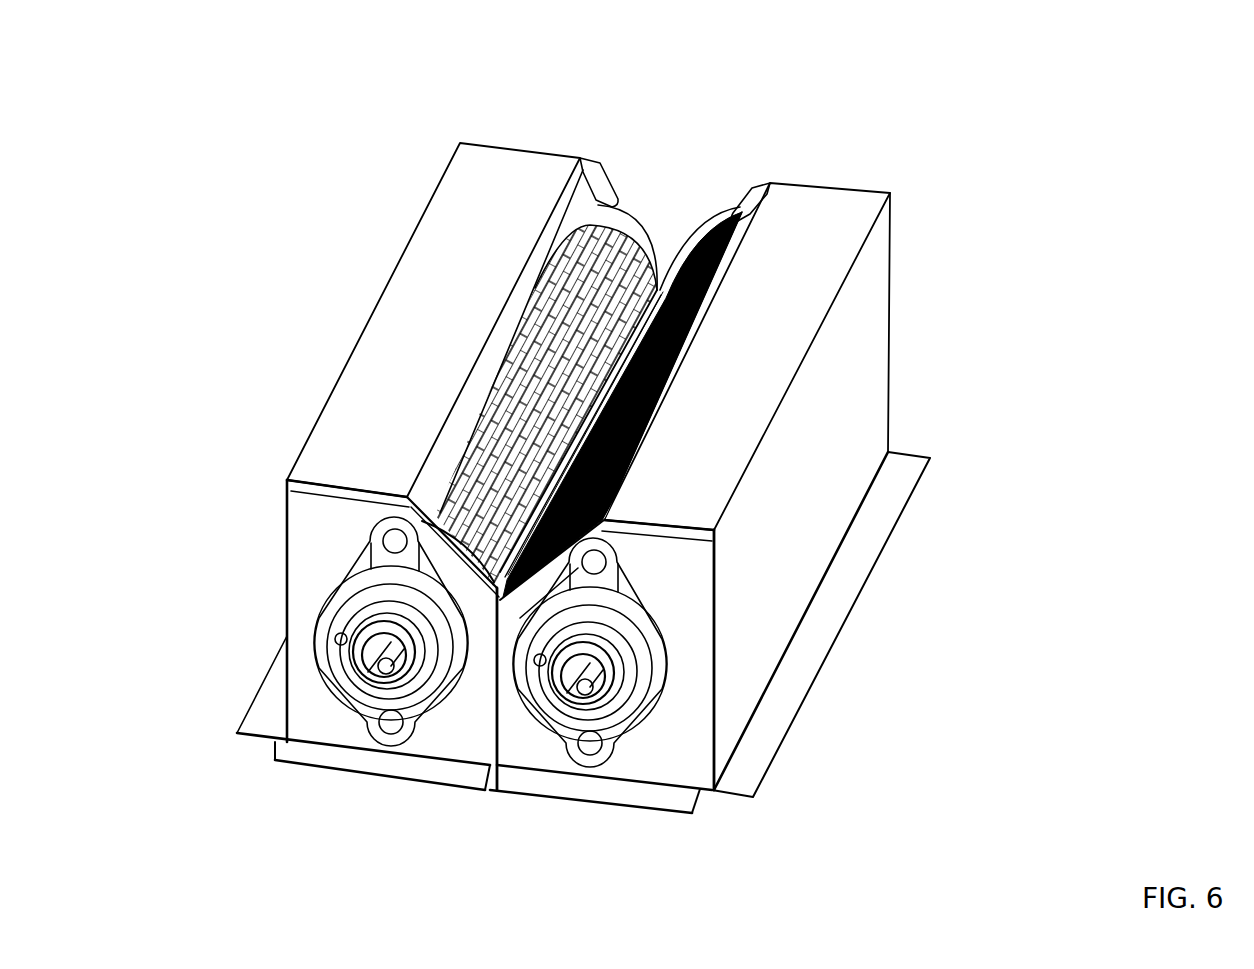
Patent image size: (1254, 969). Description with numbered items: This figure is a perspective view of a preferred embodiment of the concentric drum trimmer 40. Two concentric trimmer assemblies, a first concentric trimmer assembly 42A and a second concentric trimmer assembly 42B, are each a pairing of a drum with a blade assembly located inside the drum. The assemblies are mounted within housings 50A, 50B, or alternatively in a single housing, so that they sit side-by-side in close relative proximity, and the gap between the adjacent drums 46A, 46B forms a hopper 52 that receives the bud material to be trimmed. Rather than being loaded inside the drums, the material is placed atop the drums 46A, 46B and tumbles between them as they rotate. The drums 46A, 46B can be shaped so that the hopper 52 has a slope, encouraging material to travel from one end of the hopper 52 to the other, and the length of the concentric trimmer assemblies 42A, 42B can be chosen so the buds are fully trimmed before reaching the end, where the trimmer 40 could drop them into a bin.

The concentric drum trimmer 40 is at (990, 85).
The first concentric trimmer assembly 42A is at (337, 788).
The second concentric trimmer assembly 42B is at (657, 827).
The first drum 46A is at (640, 197).
The second drum 46B is at (680, 200).
The first housing 50A is at (343, 415).
The second housing 50B is at (853, 440).
The hopper 52 is at (688, 157).